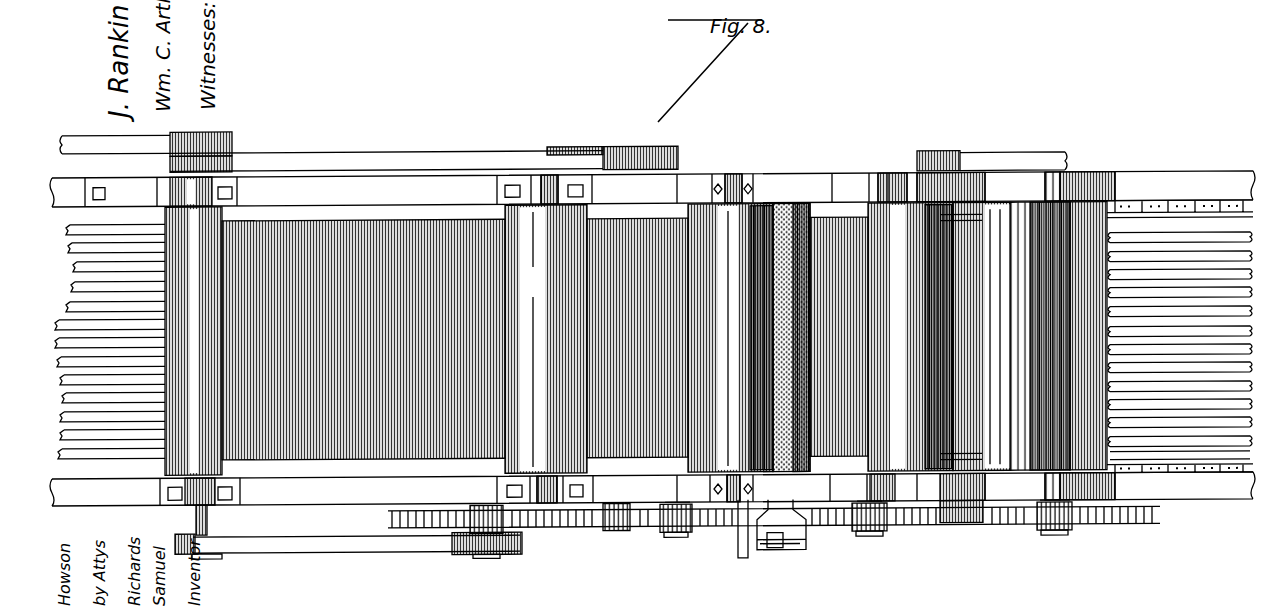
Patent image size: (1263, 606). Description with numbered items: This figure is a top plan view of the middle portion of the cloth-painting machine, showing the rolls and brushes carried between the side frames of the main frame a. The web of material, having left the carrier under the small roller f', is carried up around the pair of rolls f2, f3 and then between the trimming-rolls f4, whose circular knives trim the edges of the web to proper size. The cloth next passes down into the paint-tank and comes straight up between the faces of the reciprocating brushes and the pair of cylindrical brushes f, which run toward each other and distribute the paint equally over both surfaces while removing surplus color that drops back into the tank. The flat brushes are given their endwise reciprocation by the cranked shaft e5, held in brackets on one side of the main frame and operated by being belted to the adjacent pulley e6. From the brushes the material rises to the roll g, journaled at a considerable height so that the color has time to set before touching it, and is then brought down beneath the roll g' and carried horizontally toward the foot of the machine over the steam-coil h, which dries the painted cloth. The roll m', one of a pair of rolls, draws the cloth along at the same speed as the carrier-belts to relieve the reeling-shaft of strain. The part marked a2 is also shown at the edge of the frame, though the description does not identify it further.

The roll m' is at (291, 345).
The steam-coil h is at (107, 341).
The roll g' is at (546, 339).
The roll g is at (731, 311).
The cylindrical brushes f is at (797, 309).
The roll f3 is at (897, 212).
The trimming-rolls f4 is at (958, 226).
The roll f2 is at (997, 214).
The small roller f' is at (1088, 310).
The main frame a is at (652, 487).
The slat bar a2 is at (1210, 410).
The cranked shaft e5 is at (805, 545).
The pulley e6 is at (767, 552).